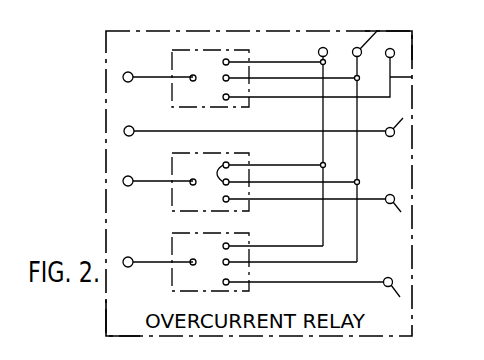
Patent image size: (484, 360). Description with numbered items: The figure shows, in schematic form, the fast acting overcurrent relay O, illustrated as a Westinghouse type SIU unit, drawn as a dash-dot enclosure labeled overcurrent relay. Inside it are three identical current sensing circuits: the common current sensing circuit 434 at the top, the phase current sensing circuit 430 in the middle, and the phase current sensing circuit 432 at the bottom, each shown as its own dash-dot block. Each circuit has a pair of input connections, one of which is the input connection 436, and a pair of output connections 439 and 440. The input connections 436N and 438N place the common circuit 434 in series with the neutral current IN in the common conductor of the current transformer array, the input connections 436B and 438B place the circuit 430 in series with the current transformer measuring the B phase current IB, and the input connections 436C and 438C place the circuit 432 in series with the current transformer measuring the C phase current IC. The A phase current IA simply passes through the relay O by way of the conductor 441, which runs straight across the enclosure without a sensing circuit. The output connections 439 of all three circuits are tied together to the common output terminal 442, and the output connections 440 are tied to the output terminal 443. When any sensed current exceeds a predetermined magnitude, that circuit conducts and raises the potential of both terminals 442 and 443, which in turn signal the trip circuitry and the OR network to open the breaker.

The common current sensing circuit 434 is at (172, 99).
The phase current sensing circuit 430 is at (172, 198).
The phase current sensing circuit 432 is at (172, 240).
The input connection 438N is at (140, 66).
The input connection 438B is at (140, 170).
The input connection 438C is at (143, 272).
The output connection 439 is at (232, 46).
The input connection 436 is at (228, 100).
The output connection 440 is at (216, 160).
The conductor 441 is at (205, 128).
The common output terminal 442 is at (319, 50).
The output terminal 443 is at (376, 30).
The input connection 436N is at (394, 51).
The input connection 436B is at (390, 194).
The input connection 436C is at (395, 273).
The neutral current IN is at (431, 76).
The A phase current IA is at (402, 120).
The B phase current IB is at (401, 212).
The C phase current IC is at (400, 297).
The overcurrent relay O is at (428, 306).